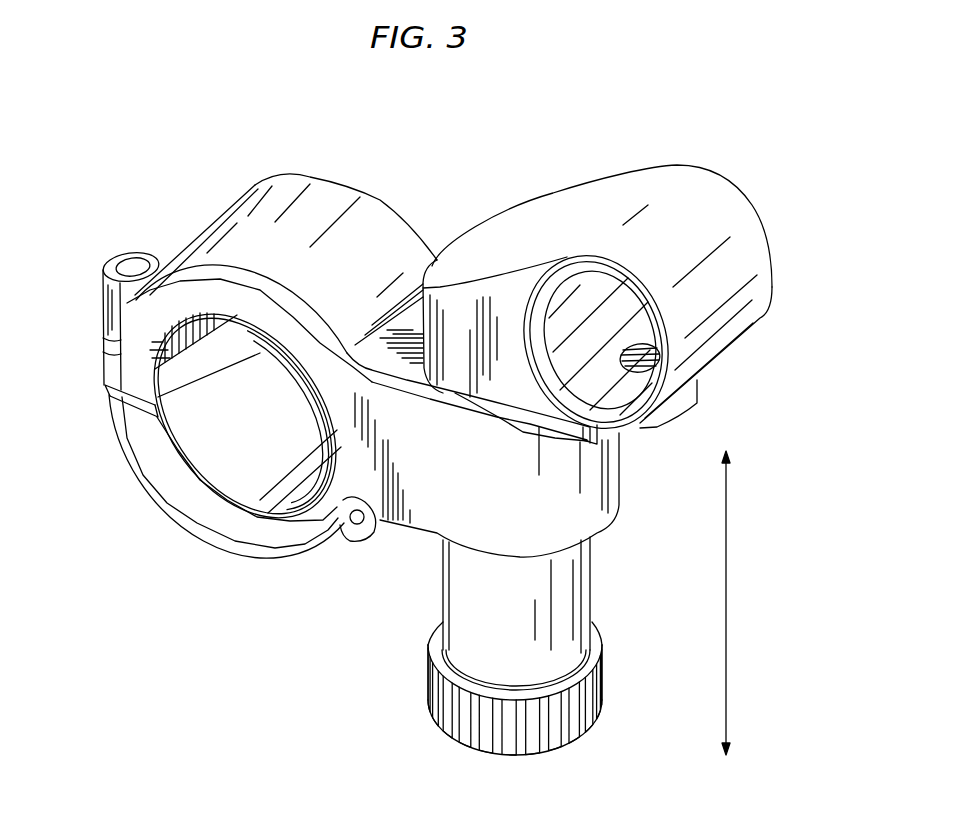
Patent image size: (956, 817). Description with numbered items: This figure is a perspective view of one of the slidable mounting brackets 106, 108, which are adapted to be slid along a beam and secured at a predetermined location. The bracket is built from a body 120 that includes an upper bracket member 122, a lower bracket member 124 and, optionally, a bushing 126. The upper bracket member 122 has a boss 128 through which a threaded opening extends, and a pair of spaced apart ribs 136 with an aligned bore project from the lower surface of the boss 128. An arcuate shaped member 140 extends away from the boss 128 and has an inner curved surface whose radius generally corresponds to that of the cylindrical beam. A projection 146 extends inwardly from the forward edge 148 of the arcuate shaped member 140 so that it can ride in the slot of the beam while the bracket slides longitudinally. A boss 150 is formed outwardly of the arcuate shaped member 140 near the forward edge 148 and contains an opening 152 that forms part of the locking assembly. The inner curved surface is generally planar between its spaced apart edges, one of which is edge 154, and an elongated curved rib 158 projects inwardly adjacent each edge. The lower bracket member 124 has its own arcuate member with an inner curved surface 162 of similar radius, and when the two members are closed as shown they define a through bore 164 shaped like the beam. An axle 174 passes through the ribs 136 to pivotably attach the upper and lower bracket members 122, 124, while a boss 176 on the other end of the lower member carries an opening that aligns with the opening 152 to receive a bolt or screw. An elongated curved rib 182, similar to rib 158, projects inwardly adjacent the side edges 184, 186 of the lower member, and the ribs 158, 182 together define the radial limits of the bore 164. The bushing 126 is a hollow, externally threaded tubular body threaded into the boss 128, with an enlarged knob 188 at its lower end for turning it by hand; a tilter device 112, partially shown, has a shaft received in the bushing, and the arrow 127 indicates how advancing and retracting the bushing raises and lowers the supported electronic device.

The mounting bracket 106 is at (621, 279).
The mounting bracket 108 is at (704, 148).
The tilter device 112 is at (730, 350).
The body 120 is at (209, 371).
The upper bracket member 122 is at (380, 203).
The lower bracket member 124 is at (222, 523).
The bushing 126 is at (597, 593).
The arrow 127 is at (727, 570).
The boss 128 is at (622, 467).
The spaced apart ribs 136 is at (378, 522).
The arcuate shaped member 140 is at (217, 227).
The projection 146 is at (167, 380).
The forward edge 148 is at (117, 394).
The boss 150 is at (107, 262).
The opening 152 is at (121, 252).
The edge 154 is at (103, 370).
The elongated curved rib 158 is at (190, 277).
The inner curved surface 162 is at (200, 467).
The through bore 164 is at (190, 447).
The axle 174 is at (353, 528).
The boss 176 is at (100, 372).
The elongated curved rib 182 is at (312, 388).
The side edge 184 is at (187, 520).
The side edge 186 is at (268, 352).
The enlarged knob 188 is at (605, 690).